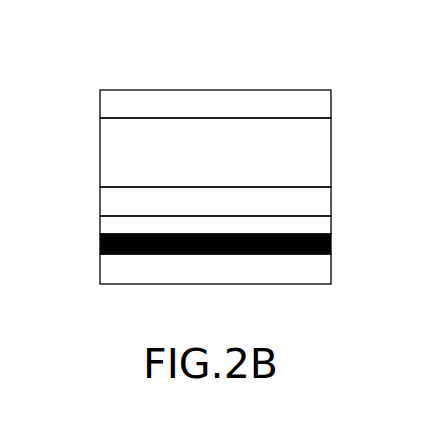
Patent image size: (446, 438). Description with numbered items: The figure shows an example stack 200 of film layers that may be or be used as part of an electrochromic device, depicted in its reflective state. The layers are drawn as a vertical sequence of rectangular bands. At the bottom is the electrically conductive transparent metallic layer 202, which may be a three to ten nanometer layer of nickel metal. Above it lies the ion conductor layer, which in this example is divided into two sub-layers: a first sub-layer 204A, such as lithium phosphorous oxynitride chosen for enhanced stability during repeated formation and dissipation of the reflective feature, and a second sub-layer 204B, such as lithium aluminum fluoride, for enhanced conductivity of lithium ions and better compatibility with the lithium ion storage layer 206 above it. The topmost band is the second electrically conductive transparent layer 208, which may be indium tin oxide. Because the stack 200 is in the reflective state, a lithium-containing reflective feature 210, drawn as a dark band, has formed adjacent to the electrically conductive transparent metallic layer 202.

The stack 200 is at (212, 146).
The electrically conductive transparent metallic layer 202 is at (235, 278).
The first sub-layer 204A is at (212, 243).
The second sub-layer 204B is at (242, 210).
The lithium ion storage layer 206 is at (235, 170).
The second electrically conductive transparent layer 208 is at (235, 112).
The lithium-containing reflective feature 210 is at (100, 248).